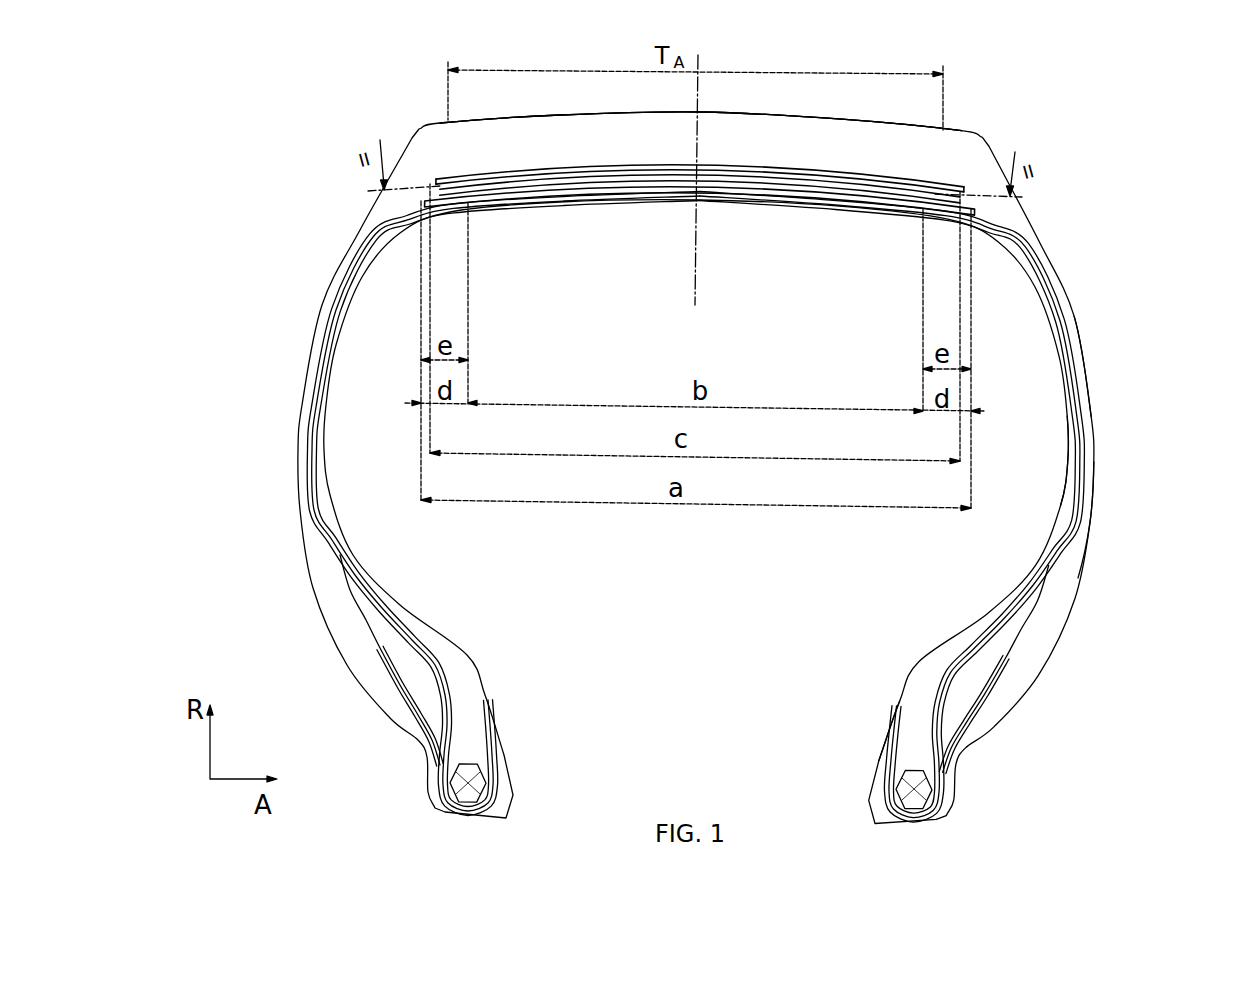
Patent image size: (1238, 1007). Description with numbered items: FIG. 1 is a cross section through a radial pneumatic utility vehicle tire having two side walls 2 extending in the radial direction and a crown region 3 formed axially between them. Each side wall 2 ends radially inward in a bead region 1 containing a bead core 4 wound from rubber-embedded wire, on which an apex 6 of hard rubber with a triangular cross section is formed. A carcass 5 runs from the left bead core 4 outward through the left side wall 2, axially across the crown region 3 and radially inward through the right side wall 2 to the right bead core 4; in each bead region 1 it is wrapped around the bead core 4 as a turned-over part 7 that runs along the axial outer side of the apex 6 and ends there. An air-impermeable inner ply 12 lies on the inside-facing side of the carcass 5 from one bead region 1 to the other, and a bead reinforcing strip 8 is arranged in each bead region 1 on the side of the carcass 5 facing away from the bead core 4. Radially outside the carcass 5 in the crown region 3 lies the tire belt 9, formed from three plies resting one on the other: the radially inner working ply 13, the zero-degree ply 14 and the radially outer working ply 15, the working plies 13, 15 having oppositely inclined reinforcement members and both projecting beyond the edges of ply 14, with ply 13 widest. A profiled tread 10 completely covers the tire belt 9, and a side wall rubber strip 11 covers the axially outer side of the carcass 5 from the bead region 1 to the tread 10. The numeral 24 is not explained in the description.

The bead region 1 is at (967, 781).
The side wall 2 is at (1097, 493).
The crown region 3 is at (748, 113).
The bead core 4 is at (468, 783).
The carcass 5 is at (1070, 540).
The apex 6 is at (1000, 650).
The turned-over part 7 is at (993, 694).
The bead reinforcing strip 8 is at (893, 745).
The tire belt 9 is at (912, 178).
The profiled tread 10 is at (804, 150).
The side wall rubber strip 11 is at (1092, 410).
The inner ply 12 is at (1071, 414).
The radially inner tire belt ply 13 is at (912, 206).
The third tire belt ply 14 is at (836, 201).
The radially outer tire belt ply 15 is at (741, 112).
The third belt layer 24 is at (784, 196).